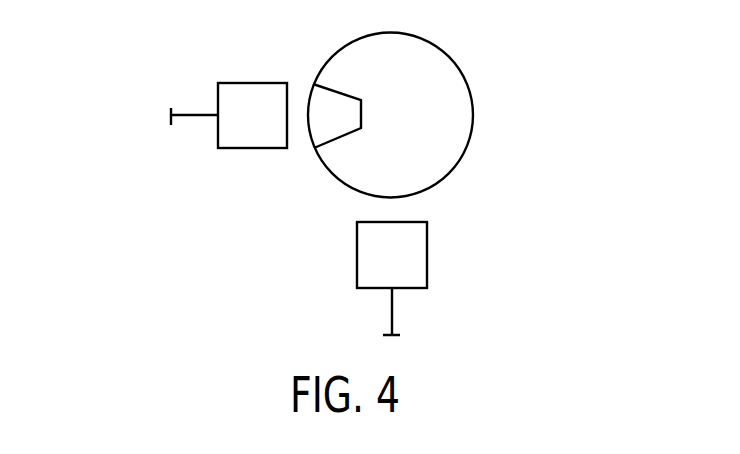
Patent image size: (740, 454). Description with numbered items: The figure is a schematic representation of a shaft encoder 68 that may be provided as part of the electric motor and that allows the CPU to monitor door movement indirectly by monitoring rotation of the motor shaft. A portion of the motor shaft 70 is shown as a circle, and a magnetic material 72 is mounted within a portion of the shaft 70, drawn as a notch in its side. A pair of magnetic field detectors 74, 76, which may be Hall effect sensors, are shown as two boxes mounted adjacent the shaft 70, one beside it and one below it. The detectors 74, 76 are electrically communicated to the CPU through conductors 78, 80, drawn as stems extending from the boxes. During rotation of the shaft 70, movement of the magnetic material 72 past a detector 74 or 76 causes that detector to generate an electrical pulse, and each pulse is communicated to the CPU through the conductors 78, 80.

The shaft encoder 68 is at (133, 98).
The motor shaft 70 is at (443, 82).
The magnetic material 72 is at (320, 102).
The magnetic field detector 74 is at (410, 246).
The magnetic field detector 76 is at (259, 137).
The conductor 78 is at (392, 307).
The conductor 80 is at (194, 115).